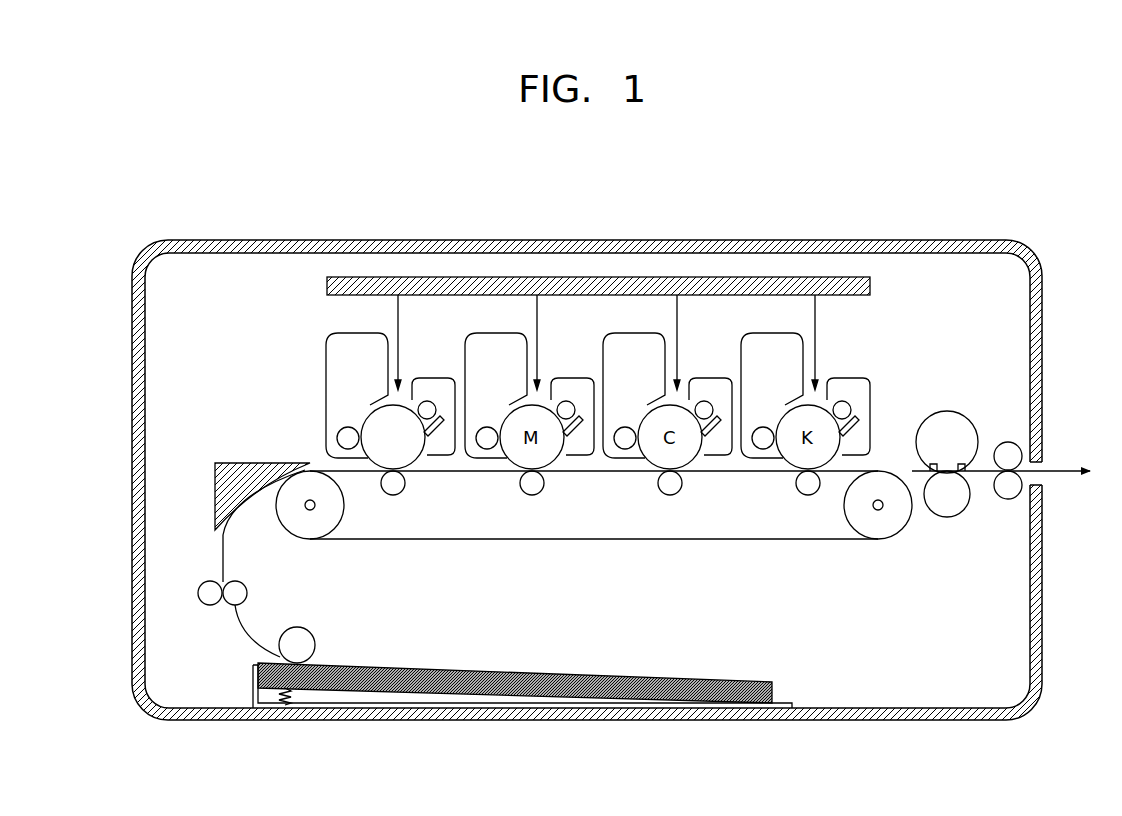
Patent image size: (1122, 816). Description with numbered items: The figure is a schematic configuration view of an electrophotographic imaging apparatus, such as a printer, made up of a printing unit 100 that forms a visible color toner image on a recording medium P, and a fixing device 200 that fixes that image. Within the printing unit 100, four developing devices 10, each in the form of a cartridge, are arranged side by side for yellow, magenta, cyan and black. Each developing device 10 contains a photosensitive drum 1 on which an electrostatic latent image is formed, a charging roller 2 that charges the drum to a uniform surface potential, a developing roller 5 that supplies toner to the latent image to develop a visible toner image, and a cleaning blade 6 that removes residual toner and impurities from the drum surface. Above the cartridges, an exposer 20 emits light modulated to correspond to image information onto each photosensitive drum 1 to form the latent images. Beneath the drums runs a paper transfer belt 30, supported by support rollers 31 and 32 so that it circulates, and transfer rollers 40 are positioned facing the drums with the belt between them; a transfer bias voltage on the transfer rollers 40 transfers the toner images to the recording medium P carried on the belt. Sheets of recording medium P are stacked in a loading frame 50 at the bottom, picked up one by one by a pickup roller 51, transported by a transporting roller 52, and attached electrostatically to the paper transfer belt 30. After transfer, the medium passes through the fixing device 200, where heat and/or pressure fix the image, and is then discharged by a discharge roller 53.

The printing unit 100 is at (886, 308).
The fixing device 200 is at (975, 390).
The developing device 10 is at (366, 439).
The exposer 20 is at (420, 277).
The photosensitive drum 1 is at (377, 460).
The charging roller 2 is at (425, 400).
The developing roller 5 is at (348, 426).
The cleaning blade 6 is at (435, 442).
The paper transfer belt 30 is at (584, 539).
The support roller 31 is at (293, 525).
The support roller 32 is at (888, 530).
The transfer roller 40 is at (397, 490).
The loading frame 50 is at (492, 654).
The pickup roller 51 is at (300, 638).
The transporting roller 52 is at (208, 583).
The discharge roller 53 is at (1018, 450).
The recording medium P is at (541, 668).